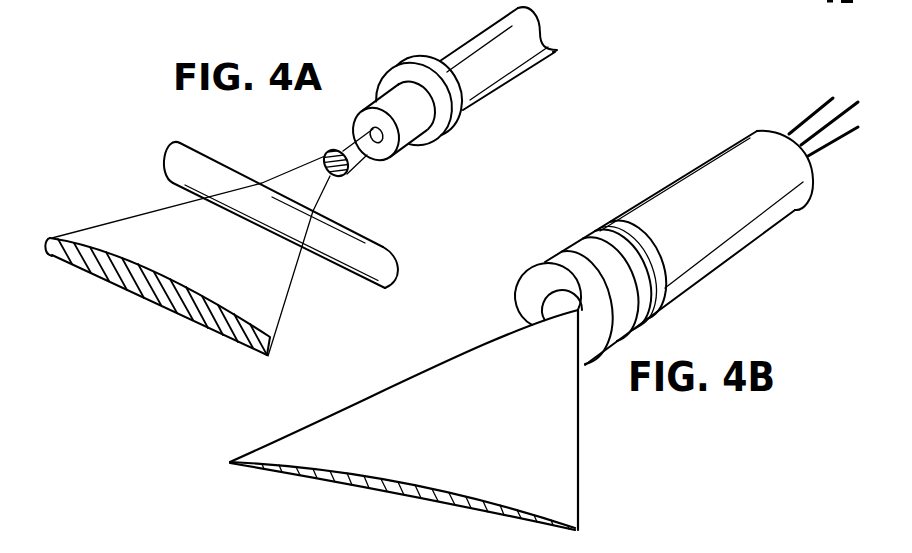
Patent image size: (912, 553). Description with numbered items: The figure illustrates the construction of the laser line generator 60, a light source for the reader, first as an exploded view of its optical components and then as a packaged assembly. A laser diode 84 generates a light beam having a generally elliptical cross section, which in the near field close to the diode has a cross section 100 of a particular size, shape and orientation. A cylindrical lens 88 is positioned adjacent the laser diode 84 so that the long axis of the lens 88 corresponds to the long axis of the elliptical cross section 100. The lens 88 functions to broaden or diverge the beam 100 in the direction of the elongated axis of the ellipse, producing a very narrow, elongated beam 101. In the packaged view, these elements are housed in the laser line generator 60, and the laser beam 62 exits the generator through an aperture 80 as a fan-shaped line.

In FIG. 4A, the cylindrical lens 88 is at (166, 163).
In FIG. 4A, the elongated beam 101 is at (220, 323).
In FIG. 4A, the beam cross section 100 is at (347, 176).
In FIG. 4A, the laser diode 84 is at (422, 146).
In FIG. 4B, the aperture 80 is at (559, 302).
In FIG. 4B, the laser line generator 60 is at (740, 251).
In FIG. 4B, the laser beam 62 is at (574, 497).